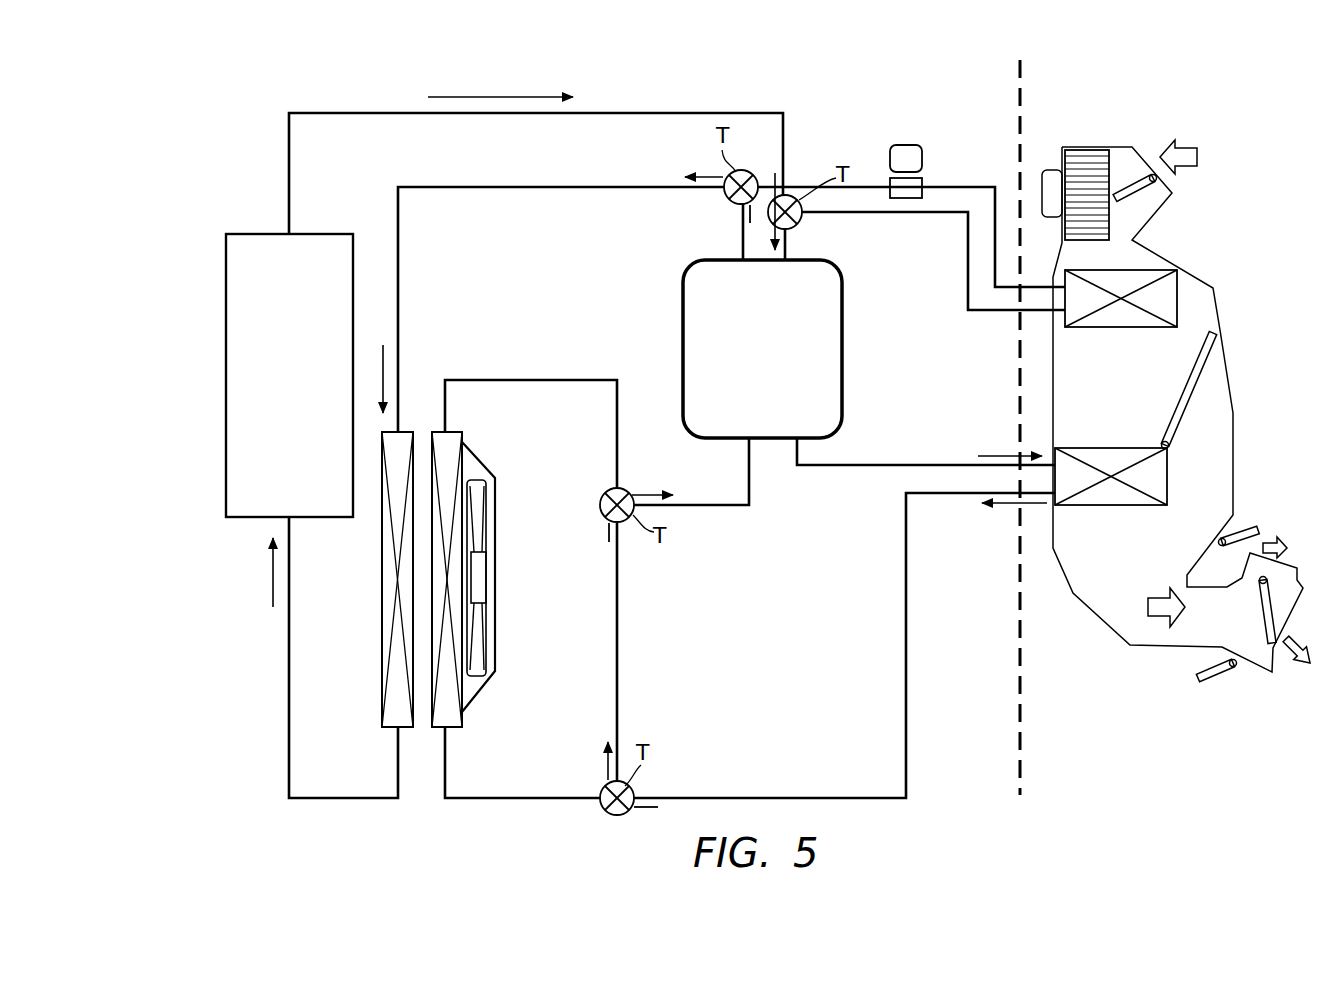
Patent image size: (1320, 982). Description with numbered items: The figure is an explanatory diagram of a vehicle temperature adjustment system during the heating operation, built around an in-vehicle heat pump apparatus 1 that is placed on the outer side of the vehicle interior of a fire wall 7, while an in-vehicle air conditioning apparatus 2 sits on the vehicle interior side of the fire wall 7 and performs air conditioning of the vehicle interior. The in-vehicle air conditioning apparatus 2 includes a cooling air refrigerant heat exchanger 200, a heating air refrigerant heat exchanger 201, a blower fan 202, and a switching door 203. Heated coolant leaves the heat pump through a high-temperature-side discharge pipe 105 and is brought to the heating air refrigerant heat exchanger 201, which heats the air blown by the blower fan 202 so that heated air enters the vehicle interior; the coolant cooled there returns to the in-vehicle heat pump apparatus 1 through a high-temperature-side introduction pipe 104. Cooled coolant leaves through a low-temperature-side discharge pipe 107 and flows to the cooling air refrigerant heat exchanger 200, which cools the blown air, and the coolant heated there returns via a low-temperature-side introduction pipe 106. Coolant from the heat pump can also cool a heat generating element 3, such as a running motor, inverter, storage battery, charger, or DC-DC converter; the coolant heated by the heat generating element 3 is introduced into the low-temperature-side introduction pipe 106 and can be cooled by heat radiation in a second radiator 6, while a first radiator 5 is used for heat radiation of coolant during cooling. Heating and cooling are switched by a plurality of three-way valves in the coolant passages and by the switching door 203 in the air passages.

The in-vehicle heat pump apparatus 1 is at (683, 342).
The in-vehicle air conditioning apparatus 2 is at (1218, 313).
The heat generating element 3 is at (226, 373).
The first radiator 5 is at (444, 432).
The second radiator 6 is at (382, 576).
The fire wall 7 is at (1021, 698).
The high-temperature-side introduction pipe 104 is at (749, 470).
The high-temperature-side discharge pipe 105 is at (822, 468).
The low-temperature-side introduction pipe 106 is at (787, 250).
The low-temperature-side discharge pipe 107 is at (743, 233).
The cooling air refrigerant heat exchanger 200 is at (1163, 270).
The heating air refrigerant heat exchanger 201 is at (1078, 506).
The blower fan 202 is at (1089, 150).
The switching door 203 is at (1215, 345).